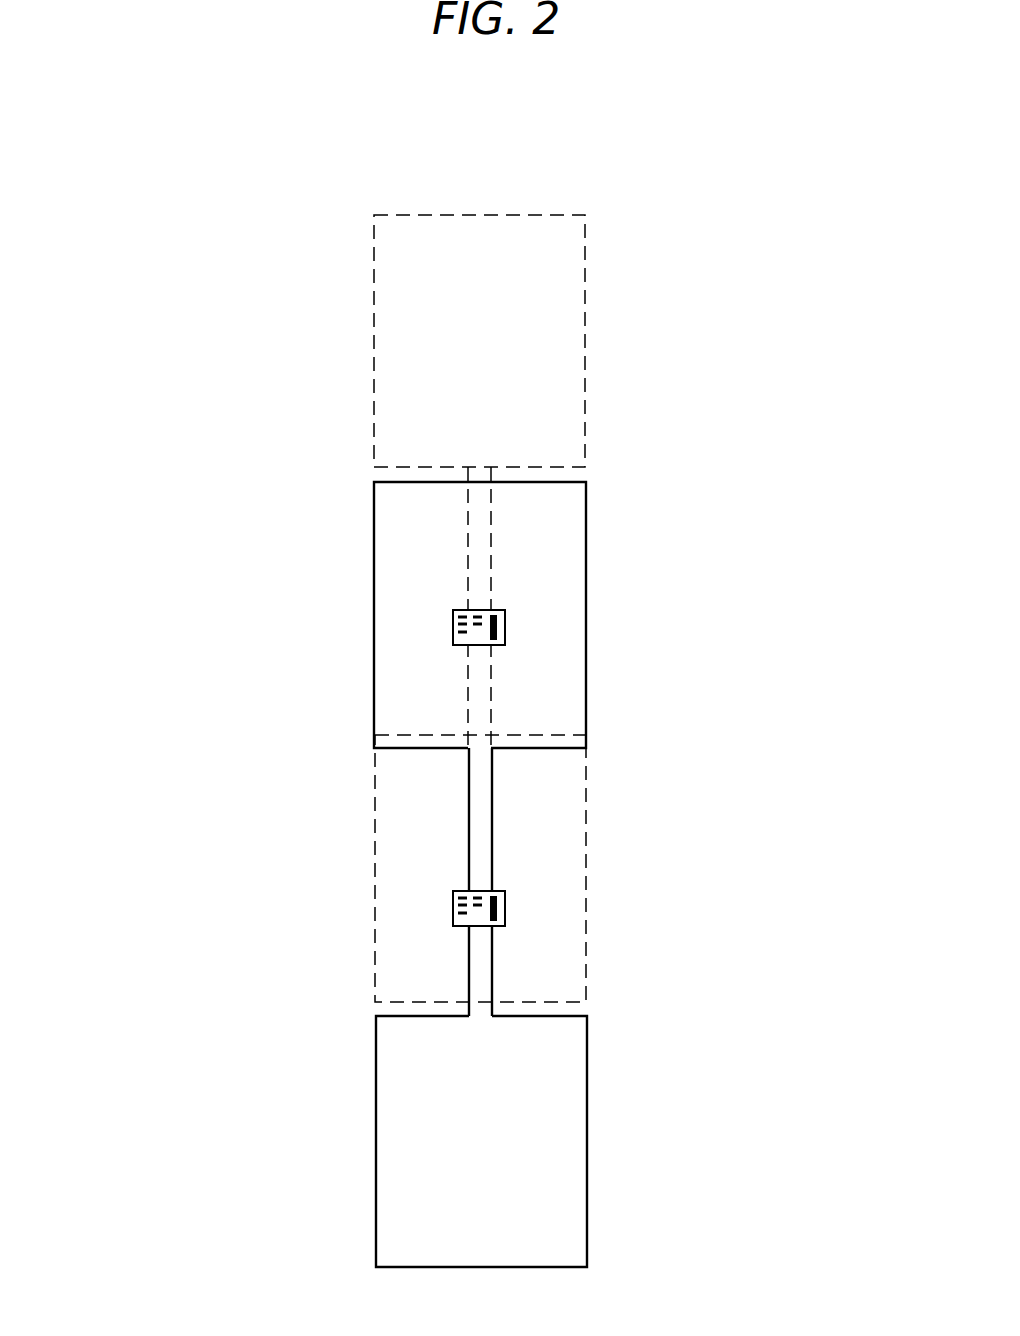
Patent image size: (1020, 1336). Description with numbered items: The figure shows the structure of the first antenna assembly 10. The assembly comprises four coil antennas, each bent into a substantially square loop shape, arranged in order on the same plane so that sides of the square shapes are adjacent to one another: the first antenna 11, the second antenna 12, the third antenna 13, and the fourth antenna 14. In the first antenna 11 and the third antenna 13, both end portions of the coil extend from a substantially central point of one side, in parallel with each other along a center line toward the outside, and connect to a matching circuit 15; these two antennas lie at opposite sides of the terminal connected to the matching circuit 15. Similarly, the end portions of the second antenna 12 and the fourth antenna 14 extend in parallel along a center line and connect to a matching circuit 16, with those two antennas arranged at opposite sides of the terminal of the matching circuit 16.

The first antenna assembly 10 is at (336, 669).
The first antenna 11 is at (585, 278).
The second antenna 12 is at (586, 533).
The third antenna 13 is at (586, 812).
The fourth antenna 14 is at (587, 1138).
The matching circuit 15 is at (505, 633).
The matching circuit 16 is at (505, 913).